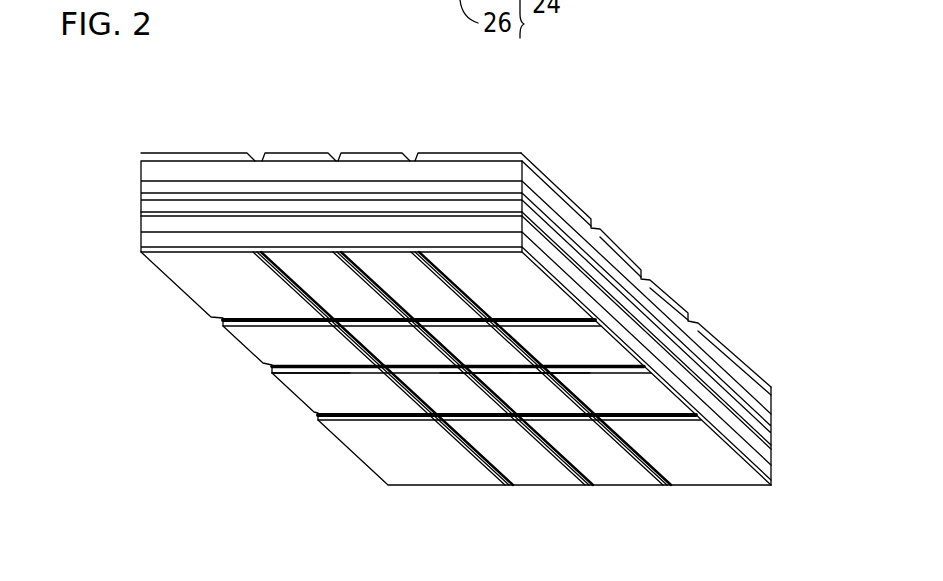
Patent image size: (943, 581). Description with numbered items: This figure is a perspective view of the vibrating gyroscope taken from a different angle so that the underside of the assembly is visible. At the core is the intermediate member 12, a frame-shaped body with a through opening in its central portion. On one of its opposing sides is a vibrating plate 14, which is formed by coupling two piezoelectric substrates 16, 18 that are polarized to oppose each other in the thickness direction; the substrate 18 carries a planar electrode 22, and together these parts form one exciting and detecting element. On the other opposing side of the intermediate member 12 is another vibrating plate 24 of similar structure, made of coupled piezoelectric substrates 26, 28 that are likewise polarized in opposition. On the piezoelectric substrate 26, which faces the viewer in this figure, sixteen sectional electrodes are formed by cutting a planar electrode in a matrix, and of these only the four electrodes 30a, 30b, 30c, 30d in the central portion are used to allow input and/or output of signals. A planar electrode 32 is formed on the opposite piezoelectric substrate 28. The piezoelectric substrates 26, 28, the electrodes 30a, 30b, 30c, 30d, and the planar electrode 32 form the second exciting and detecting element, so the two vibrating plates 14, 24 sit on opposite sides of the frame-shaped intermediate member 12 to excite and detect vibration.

The intermediate member 12 is at (142, 209).
The vibrating plate 14 is at (646, 248).
The piezoelectric substrate 16 is at (537, 180).
The piezoelectric substrate 18 is at (646, 267).
The planar electrode 22 is at (142, 202).
The vibrating plate 24 is at (658, 396).
The piezoelectric substrate 26 is at (713, 413).
The piezoelectric substrate 28 is at (732, 415).
The electrode 30a is at (445, 388).
The electrode 30b is at (527, 387).
The electrode 30c is at (397, 313).
The electrode 30d is at (475, 346).
The planar electrode 32 is at (143, 215).